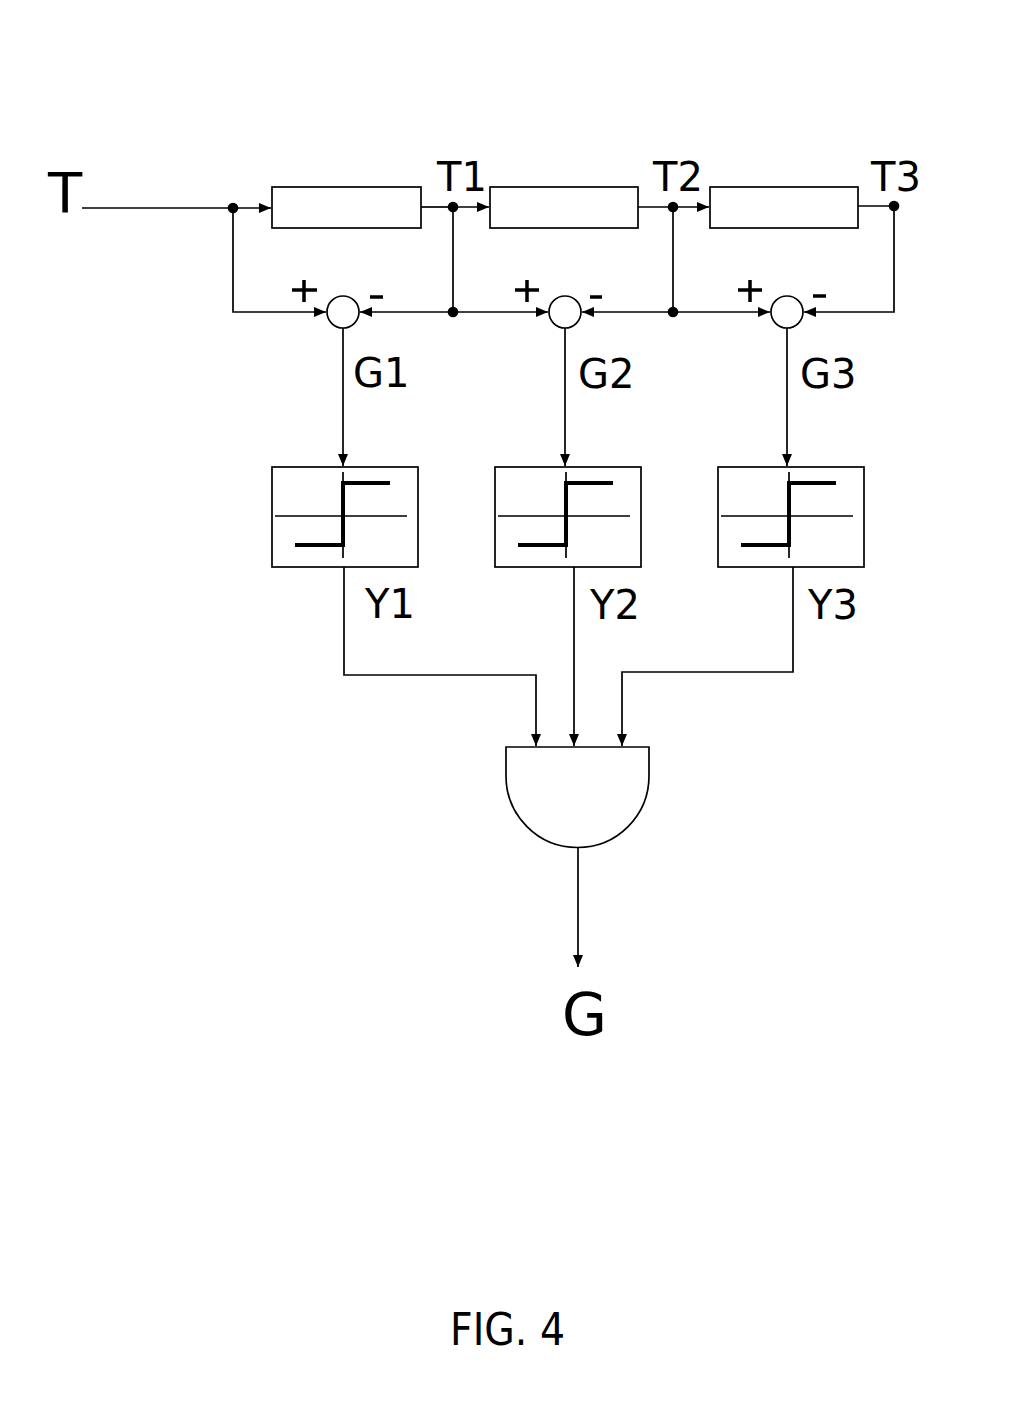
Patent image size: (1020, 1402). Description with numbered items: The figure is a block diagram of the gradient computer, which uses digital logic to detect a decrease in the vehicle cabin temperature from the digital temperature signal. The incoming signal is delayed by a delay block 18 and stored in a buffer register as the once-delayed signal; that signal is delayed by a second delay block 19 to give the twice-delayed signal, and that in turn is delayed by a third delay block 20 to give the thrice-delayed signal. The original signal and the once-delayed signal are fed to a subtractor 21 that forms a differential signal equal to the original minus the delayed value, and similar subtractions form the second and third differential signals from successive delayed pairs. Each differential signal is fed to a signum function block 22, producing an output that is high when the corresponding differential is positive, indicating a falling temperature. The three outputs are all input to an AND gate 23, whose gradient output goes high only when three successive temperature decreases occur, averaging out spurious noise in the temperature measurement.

The delay block 18 is at (340, 182).
The delay block 19 is at (558, 182).
The delay block 20 is at (777, 182).
The subtractor 21 is at (326, 328).
The signum function block 22 is at (288, 572).
The AND gate 23 is at (512, 801).